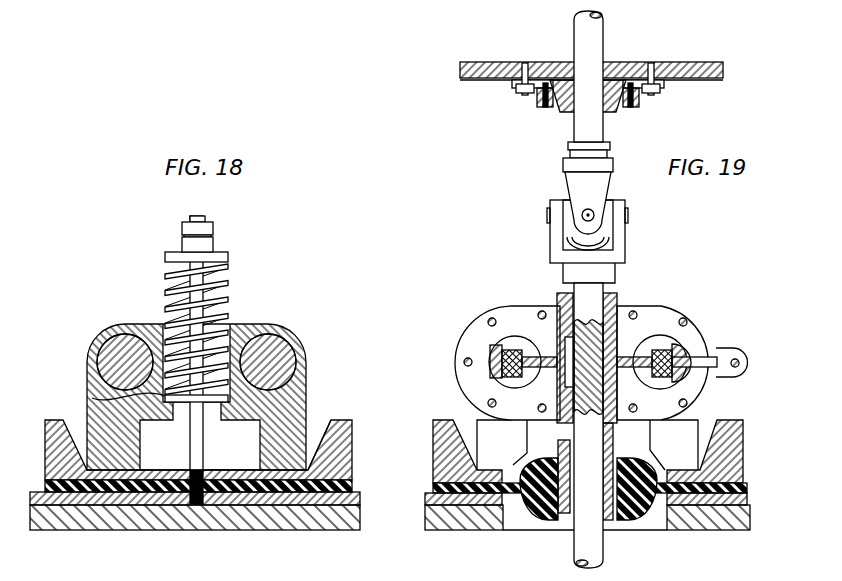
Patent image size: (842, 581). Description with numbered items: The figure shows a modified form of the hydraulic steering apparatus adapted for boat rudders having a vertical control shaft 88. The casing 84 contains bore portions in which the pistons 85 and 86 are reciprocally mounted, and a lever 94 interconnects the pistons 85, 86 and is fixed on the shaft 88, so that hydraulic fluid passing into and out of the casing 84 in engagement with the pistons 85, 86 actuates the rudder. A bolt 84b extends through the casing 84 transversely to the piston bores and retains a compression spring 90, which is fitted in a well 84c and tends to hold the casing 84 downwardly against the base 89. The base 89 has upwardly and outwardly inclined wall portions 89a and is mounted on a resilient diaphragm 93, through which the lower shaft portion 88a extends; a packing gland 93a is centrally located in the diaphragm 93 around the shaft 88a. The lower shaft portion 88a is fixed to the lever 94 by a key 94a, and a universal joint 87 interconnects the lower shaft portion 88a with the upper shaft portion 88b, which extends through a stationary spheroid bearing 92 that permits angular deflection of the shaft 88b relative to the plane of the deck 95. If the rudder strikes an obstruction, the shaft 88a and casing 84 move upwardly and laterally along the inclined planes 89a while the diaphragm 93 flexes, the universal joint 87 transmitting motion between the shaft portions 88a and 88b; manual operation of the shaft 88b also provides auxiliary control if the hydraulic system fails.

In FIG. 18, the casing 84 is at (307, 382).
In FIG. 19, the casing 84 is at (512, 305).
In FIG. 18, the bolt 84b is at (204, 219).
In FIG. 18, the well 84c is at (92, 398).
In FIG. 18, the piston 85 is at (132, 326).
In FIG. 19, the piston 85 is at (492, 362).
In FIG. 18, the piston 86 is at (280, 328).
In FIG. 19, the piston 86 is at (682, 349).
In FIG. 19, the universal joint 87 is at (574, 227).
In FIG. 19, the control shaft 88 is at (580, 129).
In FIG. 19, the lower shaft portion 88a is at (604, 546).
In FIG. 19, the upper shaft portion 88b is at (592, 32).
In FIG. 18, the base 89 is at (347, 443).
In FIG. 19, the base 89 is at (435, 460).
In FIG. 18, the inclined wall portions 89a is at (318, 440).
In FIG. 18, the spring 90 is at (232, 281).
In FIG. 19, the spheroid bearing 92 is at (625, 108).
In FIG. 18, the diaphragm 93 is at (348, 487).
In FIG. 19, the diaphragm 93 is at (525, 492).
In FIG. 19, the packing gland 93a is at (618, 445).
In FIG. 19, the lever 94 is at (630, 360).
In FIG. 19, the key 94a is at (570, 345).
In FIG. 19, the deck 95 is at (700, 63).